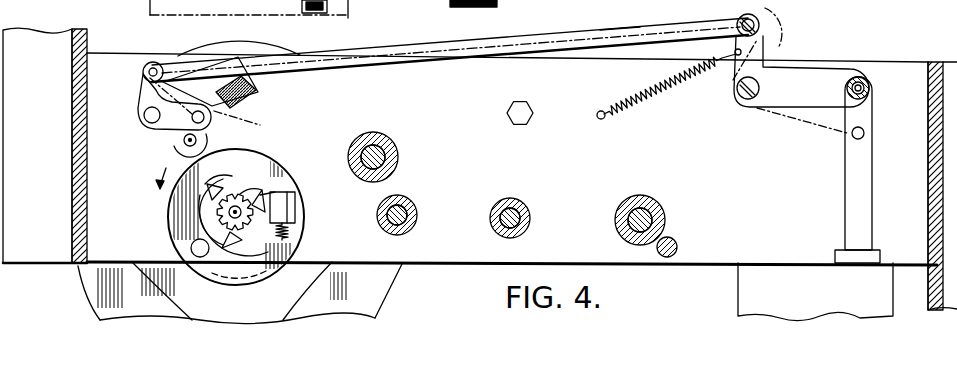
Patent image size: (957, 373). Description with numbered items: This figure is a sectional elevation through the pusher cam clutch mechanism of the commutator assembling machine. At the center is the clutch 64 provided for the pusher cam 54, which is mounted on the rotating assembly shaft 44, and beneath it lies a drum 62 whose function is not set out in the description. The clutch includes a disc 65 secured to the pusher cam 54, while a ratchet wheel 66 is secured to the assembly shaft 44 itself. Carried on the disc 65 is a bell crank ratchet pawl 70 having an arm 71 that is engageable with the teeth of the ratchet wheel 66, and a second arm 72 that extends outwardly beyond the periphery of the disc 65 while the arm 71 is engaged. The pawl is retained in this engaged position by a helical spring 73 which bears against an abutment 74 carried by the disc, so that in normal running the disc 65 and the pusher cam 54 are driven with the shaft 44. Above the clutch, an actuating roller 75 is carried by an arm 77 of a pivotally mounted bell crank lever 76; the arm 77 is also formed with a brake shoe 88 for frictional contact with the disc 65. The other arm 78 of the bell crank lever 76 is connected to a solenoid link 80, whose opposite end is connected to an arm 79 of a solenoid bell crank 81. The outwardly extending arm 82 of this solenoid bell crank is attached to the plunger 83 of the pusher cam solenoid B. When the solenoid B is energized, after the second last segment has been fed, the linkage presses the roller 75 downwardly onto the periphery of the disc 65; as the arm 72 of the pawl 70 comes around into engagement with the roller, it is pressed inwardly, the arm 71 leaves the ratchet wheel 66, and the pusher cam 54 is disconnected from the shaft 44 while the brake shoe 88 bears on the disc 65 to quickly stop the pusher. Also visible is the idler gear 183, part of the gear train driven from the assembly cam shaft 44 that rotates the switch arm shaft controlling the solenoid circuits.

The assembly shaft 44 is at (288, 194).
The pusher cam 54 is at (395, 285).
The drum 62 is at (326, 265).
The clutch 64 is at (281, 160).
The disc 65 is at (262, 145).
The ratchet wheel 66 is at (262, 192).
The bell crank ratchet pawl 70 is at (197, 273).
The arm 71 is at (190, 224).
The arm 72 is at (268, 282).
The helical spring 73 is at (296, 234).
The abutment 74 is at (296, 210).
The actuating roller 75 is at (233, 92).
The bell crank lever 76 is at (137, 122).
The arm 77 is at (180, 128).
The arm 78 is at (144, 86).
The arm 79 is at (772, 63).
The solenoid link 80 is at (660, 38).
The solenoid bell crank 81 is at (783, 68).
The arm 82 is at (843, 98).
The plunger 83 is at (868, 193).
The brake shoe 88 is at (250, 94).
The idler gear 183 is at (620, 15).
The pusher cam solenoid B is at (777, 270).